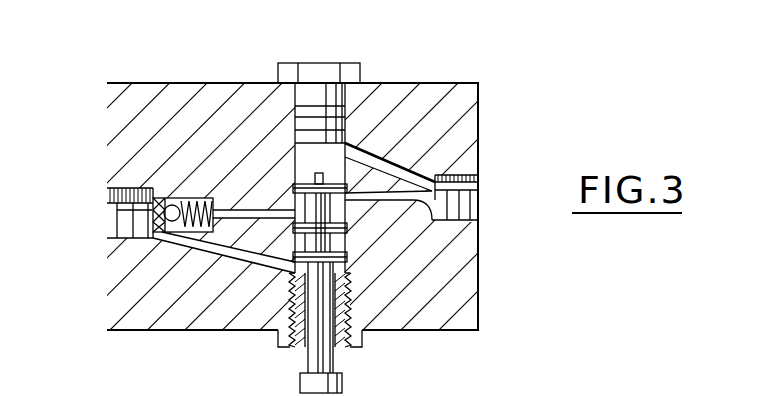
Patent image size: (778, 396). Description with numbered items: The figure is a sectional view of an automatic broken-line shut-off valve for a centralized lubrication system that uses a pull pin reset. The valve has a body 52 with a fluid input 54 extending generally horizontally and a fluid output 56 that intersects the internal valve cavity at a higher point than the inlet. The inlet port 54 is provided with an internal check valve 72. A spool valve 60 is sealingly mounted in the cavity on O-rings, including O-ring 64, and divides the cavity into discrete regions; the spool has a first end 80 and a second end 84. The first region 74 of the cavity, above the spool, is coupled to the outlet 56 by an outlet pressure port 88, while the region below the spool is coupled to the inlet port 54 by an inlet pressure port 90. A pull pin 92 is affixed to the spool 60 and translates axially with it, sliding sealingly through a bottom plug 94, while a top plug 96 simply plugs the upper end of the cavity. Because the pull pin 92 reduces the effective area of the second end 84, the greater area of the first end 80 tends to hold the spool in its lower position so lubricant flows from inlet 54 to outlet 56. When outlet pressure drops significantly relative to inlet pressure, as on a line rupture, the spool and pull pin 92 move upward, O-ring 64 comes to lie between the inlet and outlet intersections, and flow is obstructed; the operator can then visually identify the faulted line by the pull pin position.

The body 52 is at (478, 140).
The fluid input 54 is at (230, 207).
The fluid output 56 is at (436, 218).
The spool valve 60 is at (346, 242).
The O-ring seal 64 is at (346, 233).
The internal check valve 72 is at (148, 227).
The first region 74 is at (393, 83).
The first end 80 is at (310, 183).
The second end 84 is at (346, 266).
The outlet pressure port 88 is at (442, 174).
The inlet pressure port 90 is at (210, 247).
The pull pin 92 is at (312, 358).
The bottom plug 94 is at (278, 338).
The top plug 96 is at (360, 64).